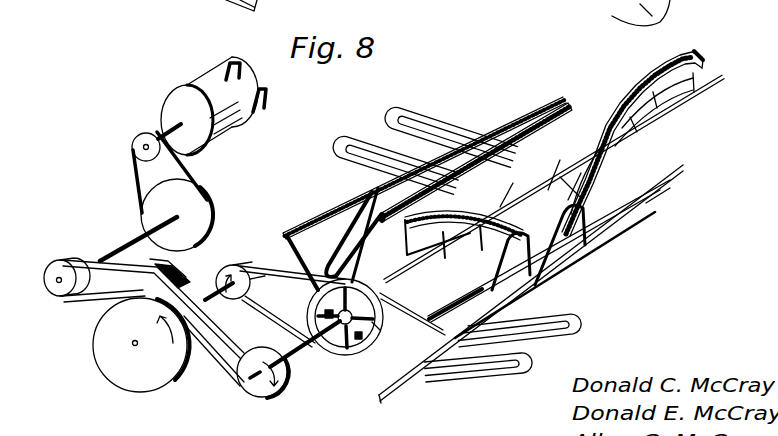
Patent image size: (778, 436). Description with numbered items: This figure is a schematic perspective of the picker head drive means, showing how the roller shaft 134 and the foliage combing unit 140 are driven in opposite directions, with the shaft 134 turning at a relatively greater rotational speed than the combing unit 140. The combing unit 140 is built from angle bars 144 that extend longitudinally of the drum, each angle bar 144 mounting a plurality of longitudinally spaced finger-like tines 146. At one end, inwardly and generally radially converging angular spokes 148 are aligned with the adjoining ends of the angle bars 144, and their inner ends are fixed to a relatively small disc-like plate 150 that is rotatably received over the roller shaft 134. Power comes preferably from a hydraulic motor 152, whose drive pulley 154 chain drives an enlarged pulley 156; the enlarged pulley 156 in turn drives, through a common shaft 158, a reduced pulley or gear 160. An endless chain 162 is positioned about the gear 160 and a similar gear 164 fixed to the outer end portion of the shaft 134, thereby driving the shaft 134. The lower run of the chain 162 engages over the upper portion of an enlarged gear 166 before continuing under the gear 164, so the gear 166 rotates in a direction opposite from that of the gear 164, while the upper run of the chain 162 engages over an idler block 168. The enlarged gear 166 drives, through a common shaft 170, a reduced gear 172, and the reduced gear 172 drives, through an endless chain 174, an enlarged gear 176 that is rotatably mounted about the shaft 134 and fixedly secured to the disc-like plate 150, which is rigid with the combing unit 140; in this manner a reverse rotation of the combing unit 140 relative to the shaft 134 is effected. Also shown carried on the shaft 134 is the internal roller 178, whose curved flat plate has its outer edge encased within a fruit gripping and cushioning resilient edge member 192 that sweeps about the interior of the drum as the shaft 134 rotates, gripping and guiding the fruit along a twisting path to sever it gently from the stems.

The roller shaft 134 is at (290, 357).
The foliage combing unit 140 is at (430, 389).
The angle bars 144 is at (455, 178).
The finger-like tines 146 is at (430, 108).
The angular spokes 148 is at (421, 316).
The disc-like plate 150 is at (355, 352).
The hydraulic motor 152 is at (200, 93).
The drive pulley 154 is at (137, 137).
The enlarged pulley 156 is at (205, 200).
The common shaft 158 is at (123, 243).
The reduced pulley or gear 160 is at (52, 285).
The endless chain 162 is at (208, 353).
The gear 164 is at (262, 385).
The enlarged gear 166 is at (125, 370).
The idler block 168 is at (157, 286).
The common shaft 170 is at (218, 272).
The reduced gear 172 is at (245, 287).
The endless chain 174 is at (263, 263).
The enlarged gear 176 is at (380, 328).
The internal roller 178 is at (750, 36).
The resilient edge member 192 is at (630, 82).